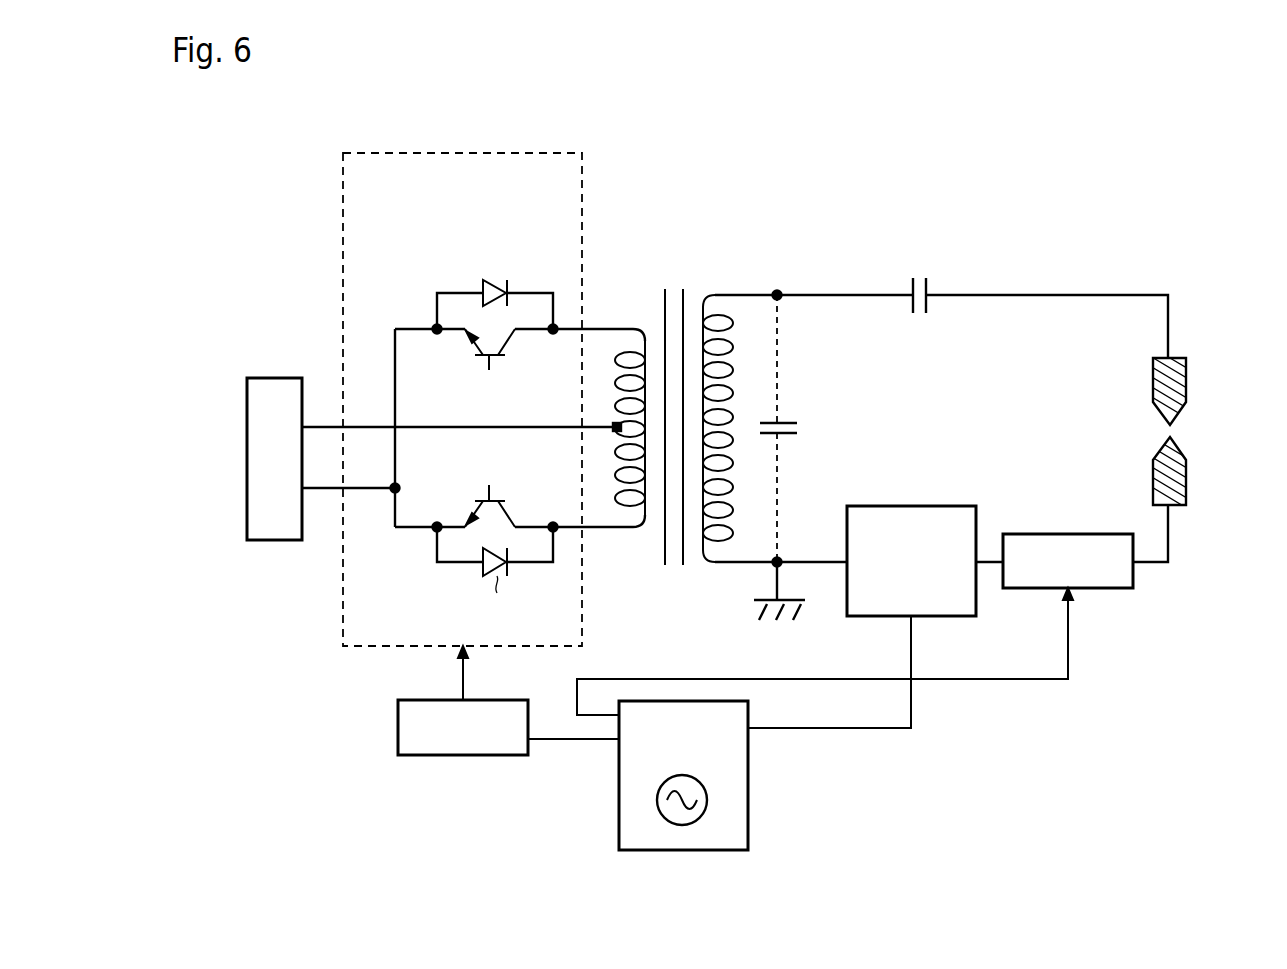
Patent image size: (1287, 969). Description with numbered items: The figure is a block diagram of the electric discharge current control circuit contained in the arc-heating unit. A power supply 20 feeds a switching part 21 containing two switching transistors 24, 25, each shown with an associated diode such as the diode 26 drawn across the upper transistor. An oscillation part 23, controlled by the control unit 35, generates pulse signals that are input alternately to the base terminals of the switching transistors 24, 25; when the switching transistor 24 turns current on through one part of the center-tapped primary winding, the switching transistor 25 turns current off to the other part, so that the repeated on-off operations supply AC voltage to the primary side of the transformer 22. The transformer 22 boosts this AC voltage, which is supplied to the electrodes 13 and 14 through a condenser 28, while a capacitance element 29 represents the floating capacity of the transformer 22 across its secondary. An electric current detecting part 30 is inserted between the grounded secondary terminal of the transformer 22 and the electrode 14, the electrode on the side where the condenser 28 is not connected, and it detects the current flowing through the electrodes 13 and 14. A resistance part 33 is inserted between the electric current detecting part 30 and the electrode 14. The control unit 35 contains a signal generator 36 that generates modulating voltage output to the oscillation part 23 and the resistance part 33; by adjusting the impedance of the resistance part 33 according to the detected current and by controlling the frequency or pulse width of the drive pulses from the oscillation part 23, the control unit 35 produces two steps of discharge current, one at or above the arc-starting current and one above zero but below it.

The electrode 13 is at (1187, 383).
The electrode 14 is at (1187, 478).
The power supply 20 is at (275, 378).
The switching part 21 is at (554, 150).
The transformer 22 is at (667, 292).
The oscillation part 23 is at (490, 757).
The switching transistor 24 is at (480, 357).
The switching transistor 25 is at (503, 498).
The diode 26 is at (497, 280).
The condenser 28 is at (930, 293).
The capacitance element 29 is at (788, 422).
The electric current detecting part 30 is at (940, 506).
The resistance part 33 is at (1102, 590).
The control unit 35 is at (750, 790).
The signal generator 36 is at (680, 826).